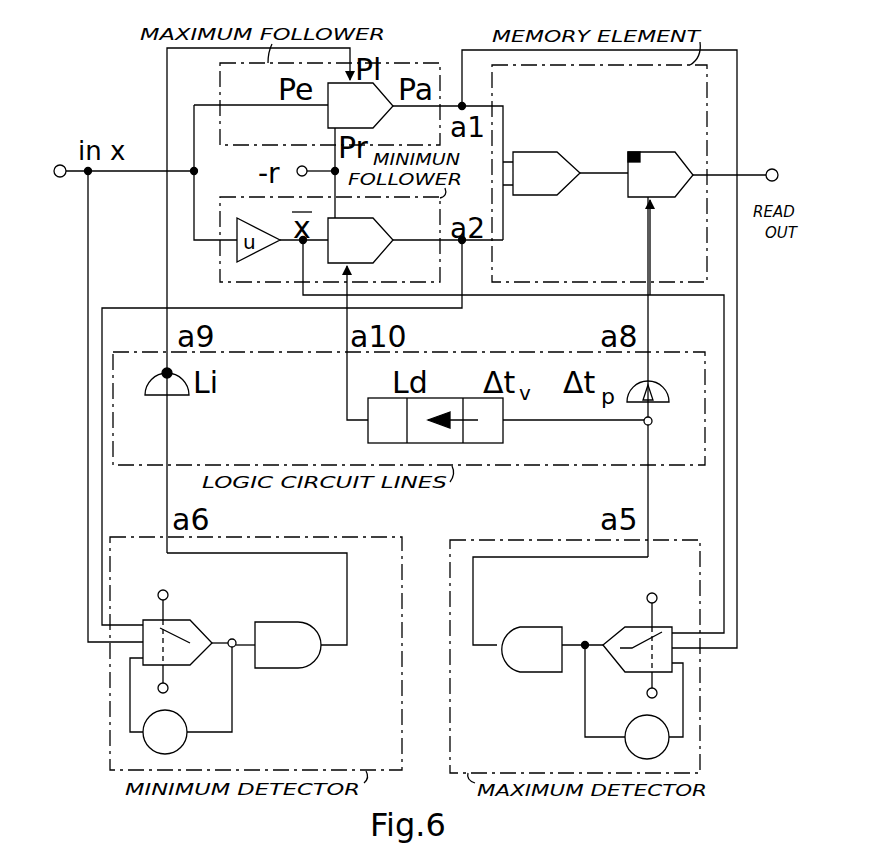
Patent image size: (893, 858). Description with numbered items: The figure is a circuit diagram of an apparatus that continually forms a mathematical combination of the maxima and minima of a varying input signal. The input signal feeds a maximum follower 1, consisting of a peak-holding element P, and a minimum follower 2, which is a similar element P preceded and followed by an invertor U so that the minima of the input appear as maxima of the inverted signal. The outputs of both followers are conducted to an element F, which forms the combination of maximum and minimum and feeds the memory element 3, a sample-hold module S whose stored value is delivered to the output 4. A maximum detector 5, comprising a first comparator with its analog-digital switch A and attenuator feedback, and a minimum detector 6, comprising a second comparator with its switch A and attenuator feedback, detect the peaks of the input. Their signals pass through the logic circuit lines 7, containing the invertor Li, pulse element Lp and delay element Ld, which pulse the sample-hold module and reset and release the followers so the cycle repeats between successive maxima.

The maximum follower 1 is at (376, 115).
The minimum follower 2 is at (378, 233).
The memory element 3 is at (612, 173).
The output 4 is at (736, 158).
The maximum detector 5 is at (575, 656).
The minimum detector 6 is at (256, 653).
The logic circuit lines 7 is at (662, 377).